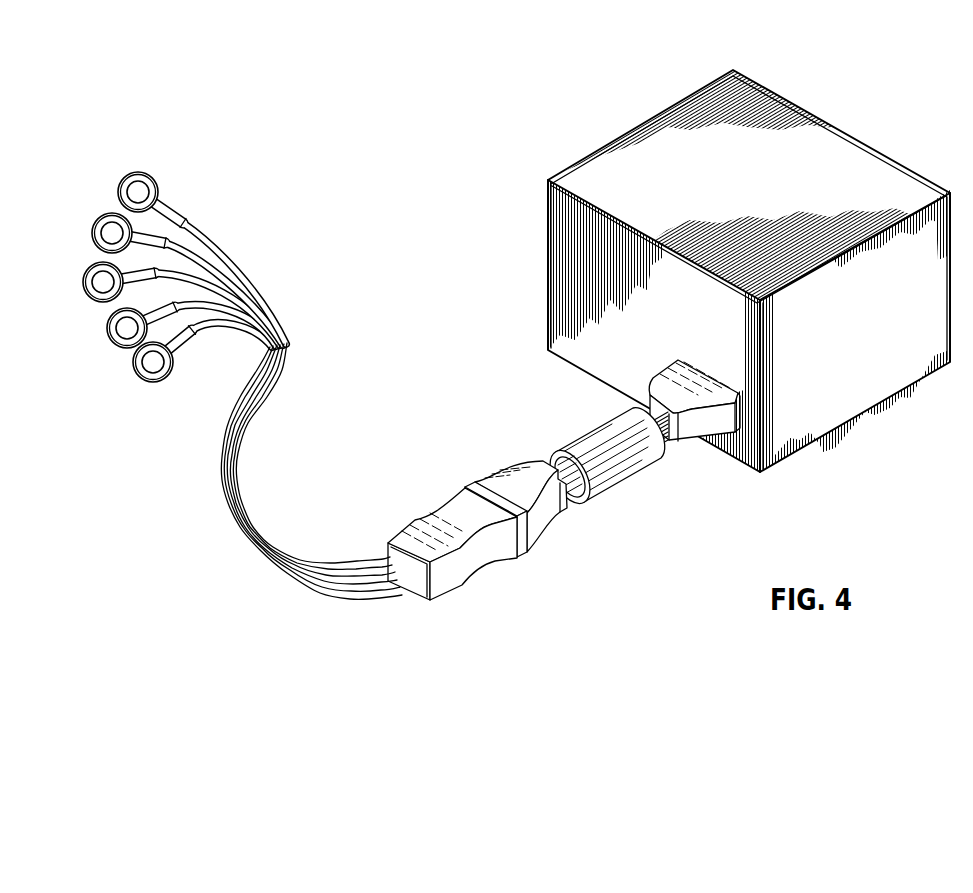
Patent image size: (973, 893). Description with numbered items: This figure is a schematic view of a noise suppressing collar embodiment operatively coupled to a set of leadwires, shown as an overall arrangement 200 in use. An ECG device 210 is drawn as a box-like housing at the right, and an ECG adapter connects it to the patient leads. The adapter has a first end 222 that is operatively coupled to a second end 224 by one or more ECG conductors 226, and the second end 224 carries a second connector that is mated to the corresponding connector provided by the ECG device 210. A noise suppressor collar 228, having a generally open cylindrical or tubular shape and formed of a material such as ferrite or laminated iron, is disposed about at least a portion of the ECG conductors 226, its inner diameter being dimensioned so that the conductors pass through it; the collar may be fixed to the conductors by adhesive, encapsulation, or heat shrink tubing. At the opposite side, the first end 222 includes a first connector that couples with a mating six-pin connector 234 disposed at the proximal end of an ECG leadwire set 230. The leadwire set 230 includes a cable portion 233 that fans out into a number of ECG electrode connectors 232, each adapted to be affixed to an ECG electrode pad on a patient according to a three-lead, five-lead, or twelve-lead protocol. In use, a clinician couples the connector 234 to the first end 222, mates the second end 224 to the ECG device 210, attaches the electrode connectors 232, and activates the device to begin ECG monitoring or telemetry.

The electrode lead system 200 is at (517, 72).
The ECG device 210 is at (553, 207).
The first end 222 is at (527, 503).
The second end 224 is at (700, 402).
The ECG conductors 226 is at (566, 450).
The noise suppressor collar 228 is at (627, 464).
The ECG leadwire set 230 is at (286, 295).
The ECG electrode connectors 232 is at (103, 213).
The ribbon cable 233 is at (243, 505).
The six-pin connector 234 is at (415, 538).